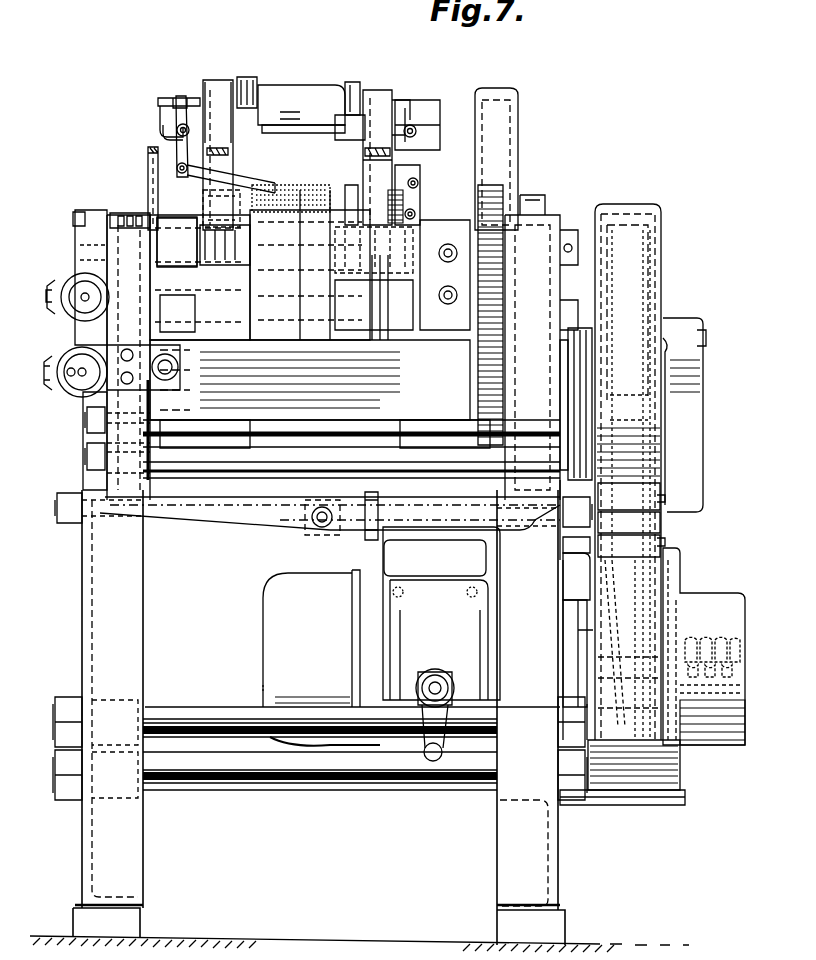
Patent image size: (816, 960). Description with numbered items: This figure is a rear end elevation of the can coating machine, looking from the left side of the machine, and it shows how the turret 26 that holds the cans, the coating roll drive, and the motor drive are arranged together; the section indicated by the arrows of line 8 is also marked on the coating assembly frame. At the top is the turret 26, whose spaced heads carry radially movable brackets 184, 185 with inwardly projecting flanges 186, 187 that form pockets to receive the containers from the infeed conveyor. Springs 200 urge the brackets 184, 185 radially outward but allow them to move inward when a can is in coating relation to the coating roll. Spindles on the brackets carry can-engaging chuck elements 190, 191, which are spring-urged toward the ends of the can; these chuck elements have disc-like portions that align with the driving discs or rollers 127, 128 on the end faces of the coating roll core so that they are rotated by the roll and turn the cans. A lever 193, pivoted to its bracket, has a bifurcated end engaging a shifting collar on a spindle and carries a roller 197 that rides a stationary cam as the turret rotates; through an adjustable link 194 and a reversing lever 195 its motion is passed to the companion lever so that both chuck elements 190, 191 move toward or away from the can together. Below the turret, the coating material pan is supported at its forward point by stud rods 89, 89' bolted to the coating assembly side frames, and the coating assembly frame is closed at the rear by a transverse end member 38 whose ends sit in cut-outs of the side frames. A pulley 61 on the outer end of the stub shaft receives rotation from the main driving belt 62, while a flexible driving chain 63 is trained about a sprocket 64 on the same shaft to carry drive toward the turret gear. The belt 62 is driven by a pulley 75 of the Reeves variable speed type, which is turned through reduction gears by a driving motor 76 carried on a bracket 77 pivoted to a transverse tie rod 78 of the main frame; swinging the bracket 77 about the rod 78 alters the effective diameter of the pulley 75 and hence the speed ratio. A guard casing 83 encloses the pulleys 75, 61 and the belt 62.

The section line 8 is at (323, 495).
The turret 26 is at (149, 124).
The transverse rear end member 38 is at (262, 525).
The pulley 61 is at (638, 272).
The main driving belt 62 is at (630, 222).
The flexible driving chain 63 is at (580, 398).
The sprocket 64 is at (576, 335).
The pulley 75 is at (712, 722).
The driving motor 76 is at (462, 525).
The bracket 77 is at (390, 560).
The transverse tie rod 78 is at (185, 528).
The guard casing 83 is at (672, 598).
The stud rod 89 is at (445, 421).
The stud rod 89' is at (205, 418).
The driving disc 127 is at (348, 192).
The driving disc 128 is at (237, 197).
The bracket 184 is at (422, 140).
The bracket 185 is at (165, 140).
The flange 186 is at (303, 120).
The flange 187 is at (262, 120).
The chuck element 190 is at (352, 82).
The chuck element 191 is at (250, 82).
The lever 193 is at (177, 170).
The adjustable link 194 is at (305, 186).
The reversing lever 195 is at (418, 177).
The roller 197 is at (175, 153).
The spring 200 is at (228, 155).